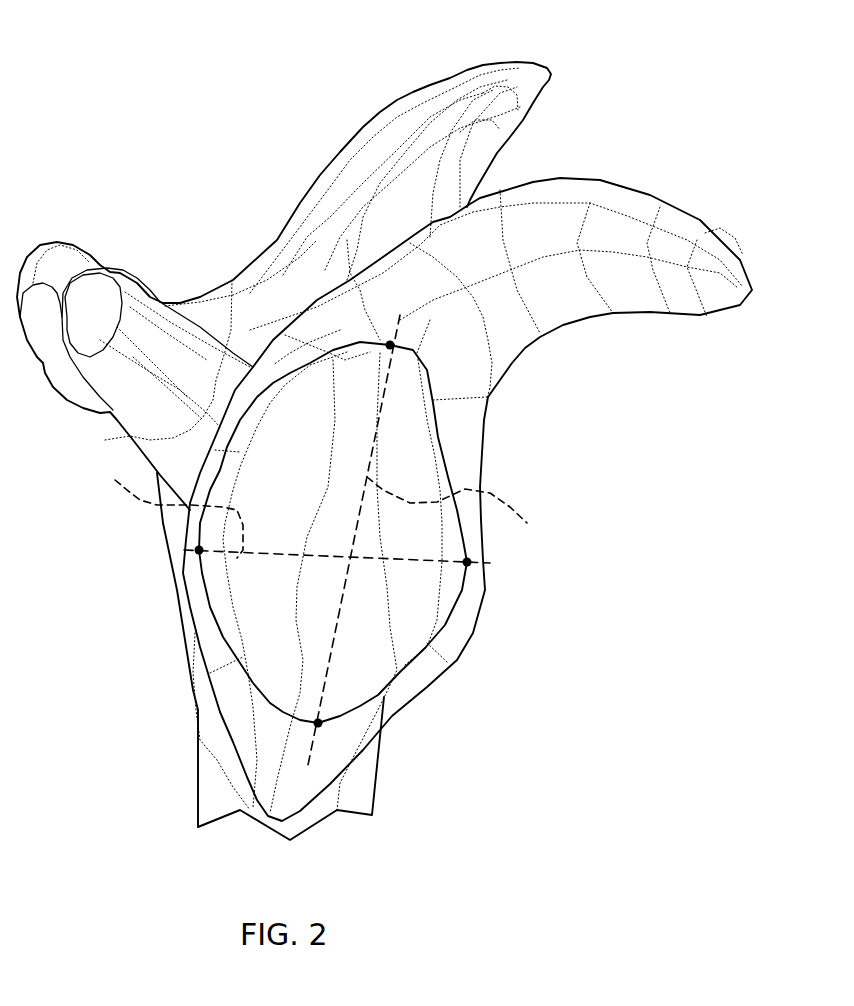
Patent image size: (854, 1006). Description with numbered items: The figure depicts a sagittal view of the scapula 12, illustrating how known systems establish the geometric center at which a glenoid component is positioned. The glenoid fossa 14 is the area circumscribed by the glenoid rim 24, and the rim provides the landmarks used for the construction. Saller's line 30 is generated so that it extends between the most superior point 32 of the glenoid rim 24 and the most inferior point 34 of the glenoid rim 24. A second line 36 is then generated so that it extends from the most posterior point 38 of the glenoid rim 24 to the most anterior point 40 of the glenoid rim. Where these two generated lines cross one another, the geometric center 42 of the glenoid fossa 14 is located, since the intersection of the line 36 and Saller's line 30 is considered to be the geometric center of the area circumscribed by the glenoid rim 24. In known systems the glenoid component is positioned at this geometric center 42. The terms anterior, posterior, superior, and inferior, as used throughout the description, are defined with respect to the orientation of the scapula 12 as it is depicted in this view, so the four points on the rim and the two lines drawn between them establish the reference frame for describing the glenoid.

The scapula 12 is at (186, 199).
The glenoid fossa 14 is at (314, 429).
The glenoid rim 24 is at (380, 532).
The Saller's line 30 is at (463, 512).
The most superior point 32 is at (392, 345).
The most inferior point 34 is at (318, 723).
The second line 36 is at (165, 507).
The most posterior point 38 is at (198, 550).
The most anterior point 40 is at (467, 562).
The geometric center 42 is at (347, 553).